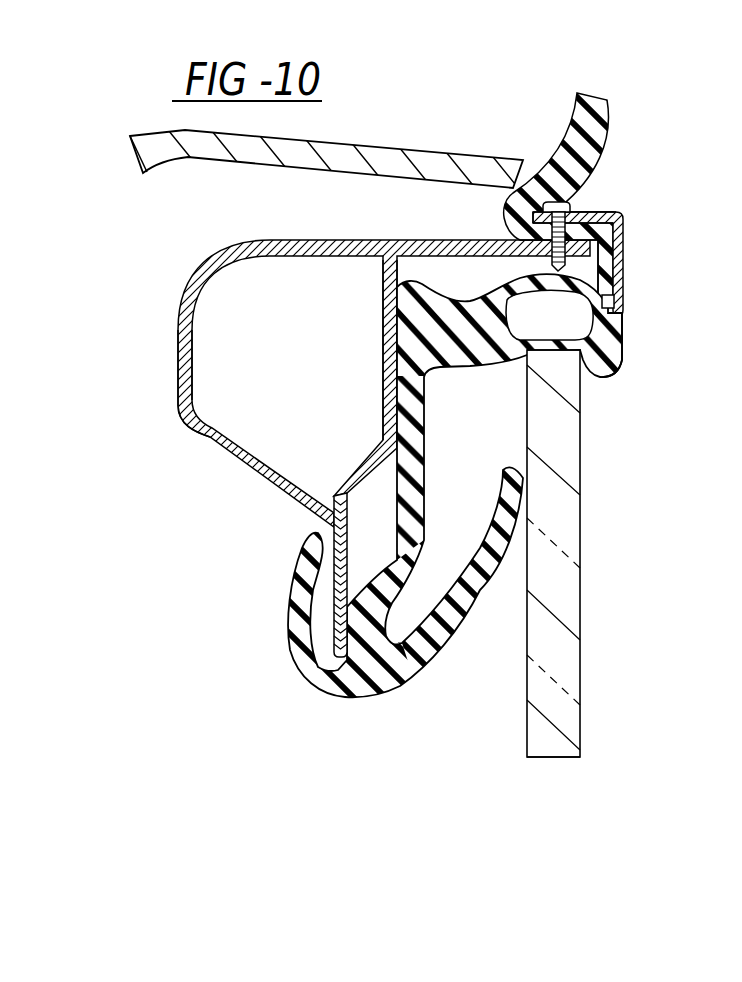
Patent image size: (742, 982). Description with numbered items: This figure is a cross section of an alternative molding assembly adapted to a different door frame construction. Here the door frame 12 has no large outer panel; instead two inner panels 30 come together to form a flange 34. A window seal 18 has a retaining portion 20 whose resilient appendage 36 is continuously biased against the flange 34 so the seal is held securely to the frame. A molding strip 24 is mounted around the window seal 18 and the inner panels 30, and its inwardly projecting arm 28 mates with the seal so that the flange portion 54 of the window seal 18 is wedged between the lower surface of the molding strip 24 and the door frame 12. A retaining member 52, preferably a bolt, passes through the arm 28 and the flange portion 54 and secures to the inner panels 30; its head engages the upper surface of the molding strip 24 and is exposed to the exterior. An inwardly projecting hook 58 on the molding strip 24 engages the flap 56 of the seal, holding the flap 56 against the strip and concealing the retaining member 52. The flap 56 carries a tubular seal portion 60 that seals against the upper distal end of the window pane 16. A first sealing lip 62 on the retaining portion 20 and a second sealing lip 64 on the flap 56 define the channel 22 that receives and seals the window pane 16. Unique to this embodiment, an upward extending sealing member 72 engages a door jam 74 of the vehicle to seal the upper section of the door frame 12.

The door frame 12 is at (470, 240).
The window pane 16 is at (577, 578).
The window seal 18 is at (497, 447).
The retaining portion 20 is at (397, 541).
The channel 22 is at (500, 637).
The molding strip 24 is at (623, 242).
The inwardly projecting arm 28 is at (590, 210).
The inner panel 30 is at (382, 337).
The flange 34 is at (334, 520).
The resilient appendage 36 is at (286, 612).
The retaining member 52 is at (575, 203).
The flange portion 54 is at (598, 214).
The flap 56 is at (483, 360).
The inwardly projecting hook 58 is at (616, 310).
The tubular seal portion 60 is at (622, 262).
The first sealing lip 62 is at (437, 652).
The second sealing lip 64 is at (612, 378).
The upward extending sealing member 72 is at (522, 195).
The door jam 74 is at (425, 163).